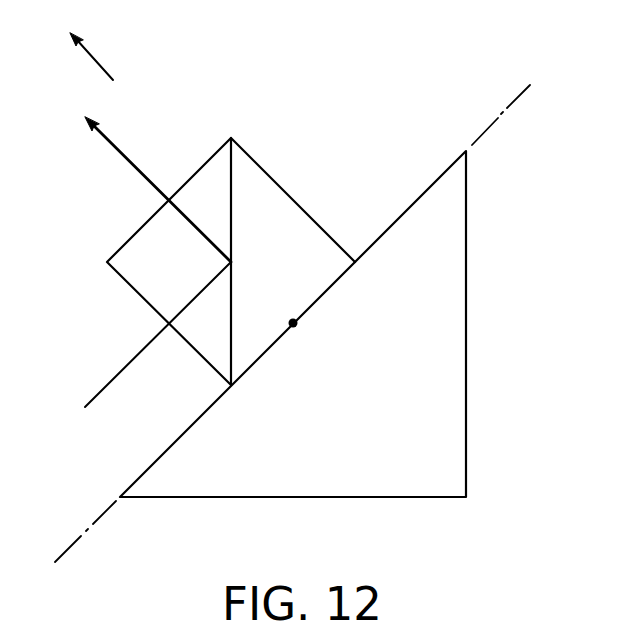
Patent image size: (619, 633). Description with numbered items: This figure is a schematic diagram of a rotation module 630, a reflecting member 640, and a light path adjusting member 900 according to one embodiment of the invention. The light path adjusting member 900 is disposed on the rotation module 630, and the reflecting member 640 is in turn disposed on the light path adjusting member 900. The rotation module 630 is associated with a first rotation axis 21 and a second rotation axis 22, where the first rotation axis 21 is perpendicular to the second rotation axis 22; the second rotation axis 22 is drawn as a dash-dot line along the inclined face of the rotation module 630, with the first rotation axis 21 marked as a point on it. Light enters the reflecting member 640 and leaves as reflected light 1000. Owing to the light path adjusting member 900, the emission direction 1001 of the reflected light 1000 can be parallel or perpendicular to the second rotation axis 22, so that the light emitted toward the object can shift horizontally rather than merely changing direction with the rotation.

The rotation module 630 is at (450, 378).
The second rotation axis 22 is at (518, 100).
The first rotation axis 21 is at (293, 323).
The light path adjusting member 900 is at (290, 218).
The reflecting member 640 is at (200, 183).
The reflected light 1000 is at (125, 162).
The emission direction 1001 is at (93, 50).